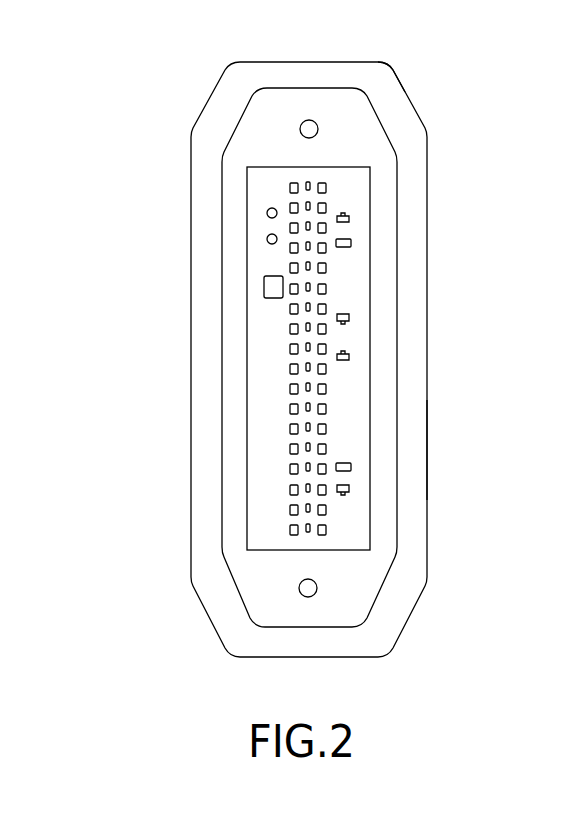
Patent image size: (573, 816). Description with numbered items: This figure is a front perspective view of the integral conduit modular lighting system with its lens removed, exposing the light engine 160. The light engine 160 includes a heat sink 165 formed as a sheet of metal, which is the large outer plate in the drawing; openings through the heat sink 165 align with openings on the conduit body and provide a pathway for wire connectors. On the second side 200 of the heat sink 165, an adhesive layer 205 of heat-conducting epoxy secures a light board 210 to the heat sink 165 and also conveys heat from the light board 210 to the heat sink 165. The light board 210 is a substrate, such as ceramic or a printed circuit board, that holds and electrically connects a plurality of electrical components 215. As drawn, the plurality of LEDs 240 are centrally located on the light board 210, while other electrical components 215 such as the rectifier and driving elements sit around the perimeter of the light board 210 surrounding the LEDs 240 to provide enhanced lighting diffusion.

The light engine 160 is at (253, 265).
The heat sink 165 is at (383, 68).
The second side 200 is at (413, 273).
The adhesive layer 205 is at (375, 147).
The light board 210 is at (358, 532).
The electrical components 215 is at (415, 452).
The LEDs 240 is at (326, 390).